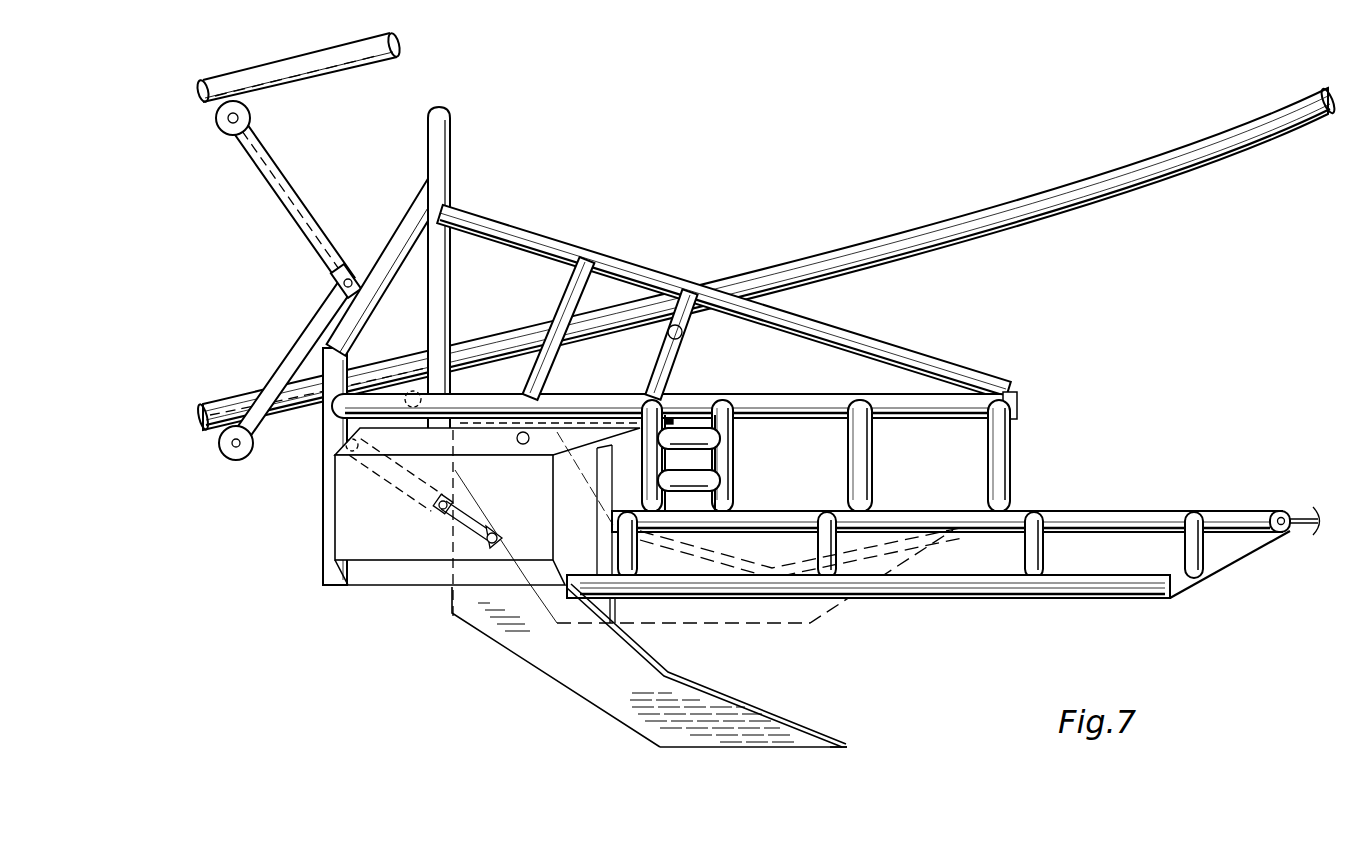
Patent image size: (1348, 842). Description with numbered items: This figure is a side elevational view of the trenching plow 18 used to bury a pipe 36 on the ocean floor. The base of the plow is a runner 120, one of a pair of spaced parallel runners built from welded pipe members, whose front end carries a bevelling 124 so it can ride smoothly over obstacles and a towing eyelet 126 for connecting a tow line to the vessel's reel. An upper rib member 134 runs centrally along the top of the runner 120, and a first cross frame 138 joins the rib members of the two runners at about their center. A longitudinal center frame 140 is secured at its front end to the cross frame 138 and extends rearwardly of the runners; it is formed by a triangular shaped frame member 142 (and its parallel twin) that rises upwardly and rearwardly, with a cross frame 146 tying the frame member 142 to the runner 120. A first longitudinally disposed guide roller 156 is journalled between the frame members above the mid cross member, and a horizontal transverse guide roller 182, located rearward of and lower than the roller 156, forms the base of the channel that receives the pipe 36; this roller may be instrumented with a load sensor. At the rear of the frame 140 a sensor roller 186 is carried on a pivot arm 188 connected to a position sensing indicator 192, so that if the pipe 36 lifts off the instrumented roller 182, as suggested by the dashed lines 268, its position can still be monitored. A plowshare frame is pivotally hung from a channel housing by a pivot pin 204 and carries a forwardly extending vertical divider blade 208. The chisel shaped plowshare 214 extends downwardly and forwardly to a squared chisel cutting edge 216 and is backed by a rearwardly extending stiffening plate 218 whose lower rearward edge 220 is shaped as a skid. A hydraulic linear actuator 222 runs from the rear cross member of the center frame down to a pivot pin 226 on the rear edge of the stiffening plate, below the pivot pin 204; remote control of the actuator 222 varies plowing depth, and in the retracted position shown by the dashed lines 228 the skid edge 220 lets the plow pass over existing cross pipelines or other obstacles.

The plow 18 is at (674, 250).
The pipe 36 is at (982, 216).
The runner 120 is at (1078, 598).
The bevelling 124 is at (1238, 545).
The towing eyelet 126 is at (1282, 508).
The upper rib member 134 is at (1115, 511).
The first cross frame 138 is at (1002, 448).
The center frame 140 is at (563, 232).
The frame member 142 is at (885, 350).
The cross frame 146 is at (736, 462).
The first guide roller 156 is at (688, 355).
The guide roller 182 is at (416, 394).
The sensor roller 186 is at (246, 455).
The pivot arm 188 is at (284, 367).
The position sensing indicator 192 is at (348, 270).
The pivot pin 204 is at (522, 445).
The divider blade 208 is at (622, 607).
The plowshare 214 is at (700, 688).
The chisel cutting edge 216 is at (849, 747).
The stiffening plate 218 is at (521, 650).
The lower rearward edge 220 is at (662, 749).
The hydraulic linear actuator 222 is at (382, 472).
The pivot pin 226 is at (437, 506).
The dashed lines 228 is at (830, 617).
The dashed lines 268 is at (318, 77).